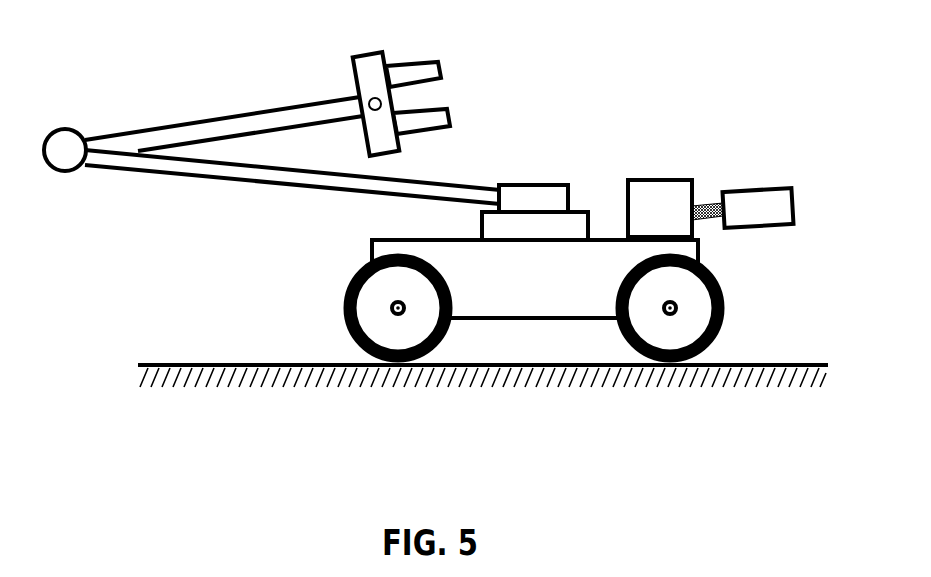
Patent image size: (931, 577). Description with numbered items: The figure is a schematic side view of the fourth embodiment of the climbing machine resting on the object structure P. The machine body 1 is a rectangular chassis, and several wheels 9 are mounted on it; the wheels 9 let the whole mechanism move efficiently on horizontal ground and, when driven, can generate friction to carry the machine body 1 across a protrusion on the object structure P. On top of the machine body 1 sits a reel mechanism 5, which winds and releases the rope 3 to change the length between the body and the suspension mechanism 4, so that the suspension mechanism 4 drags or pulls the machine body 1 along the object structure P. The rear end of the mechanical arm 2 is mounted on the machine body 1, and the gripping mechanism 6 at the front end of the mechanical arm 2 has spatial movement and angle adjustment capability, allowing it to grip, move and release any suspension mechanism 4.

The machine body 1 is at (515, 302).
The mechanical arm 2 is at (210, 173).
The rope 3 is at (703, 203).
The suspension mechanism 4 is at (775, 203).
The reel mechanism 5 is at (643, 195).
The gripping mechanism 6 is at (440, 73).
The wheels 9 is at (392, 340).
The object structure P is at (160, 378).